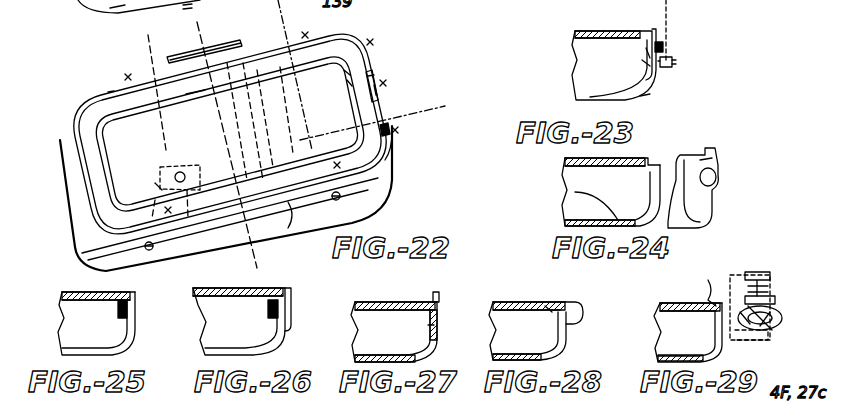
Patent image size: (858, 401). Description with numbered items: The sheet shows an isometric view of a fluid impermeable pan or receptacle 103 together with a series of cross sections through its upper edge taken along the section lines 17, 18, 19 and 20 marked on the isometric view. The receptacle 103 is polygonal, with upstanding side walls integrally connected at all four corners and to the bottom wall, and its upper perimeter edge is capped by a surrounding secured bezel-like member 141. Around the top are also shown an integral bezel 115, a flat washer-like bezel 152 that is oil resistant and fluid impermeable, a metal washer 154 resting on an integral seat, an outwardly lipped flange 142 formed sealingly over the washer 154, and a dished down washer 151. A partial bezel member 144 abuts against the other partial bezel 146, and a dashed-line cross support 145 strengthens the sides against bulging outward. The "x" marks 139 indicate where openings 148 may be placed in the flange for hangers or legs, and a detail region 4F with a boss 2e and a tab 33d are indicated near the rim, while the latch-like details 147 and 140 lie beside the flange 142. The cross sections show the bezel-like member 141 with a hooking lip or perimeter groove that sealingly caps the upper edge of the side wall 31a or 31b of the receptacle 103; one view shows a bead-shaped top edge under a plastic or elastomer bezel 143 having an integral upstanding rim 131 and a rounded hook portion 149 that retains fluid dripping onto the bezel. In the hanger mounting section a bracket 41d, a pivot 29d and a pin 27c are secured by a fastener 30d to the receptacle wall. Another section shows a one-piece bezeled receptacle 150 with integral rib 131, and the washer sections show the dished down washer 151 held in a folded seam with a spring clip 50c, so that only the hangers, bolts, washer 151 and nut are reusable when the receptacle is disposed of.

In FIG. 22, the tab portion 33d is at (122, 16).
In FIG. 22, the bezel-like member 141 is at (74, 110).
In FIG. 23, the bezel-like member 141 is at (623, 32).
In FIG. 24, the bezel-like member 141 is at (665, 160).
In FIG. 25, the bezel-like member 141 is at (125, 292).
In FIG. 26, the bezel-like member 141 is at (250, 298).
In FIG. 22, the partial bezel 146 is at (108, 90).
In FIG. 22, the receptacle 103 is at (378, 187).
In FIG. 23, the receptacle 103 is at (660, 79).
In FIG. 24, the receptacle 103 is at (590, 207).
In FIG. 25, the receptacle 103 is at (130, 338).
In FIG. 26, the receptacle 103 is at (268, 329).
In FIG. 27, the receptacle 103 is at (428, 330).
In FIG. 28, the receptacle 103 is at (566, 329).
In FIG. 29, the receptacle 103 is at (712, 330).
In FIG. 22, the receptacle wall 31a is at (412, 158).
In FIG. 23, the receptacle wall 31a is at (684, 81).
In FIG. 22, the bezel 143 is at (154, 46).
In FIG. 24, the bezel 143 is at (722, 168).
In FIG. 22, the cross support 145 is at (215, 93).
In FIG. 22, the latch recess 147 is at (360, 54).
In FIG. 22, the latch protrusion 140 is at (380, 72).
In FIG. 22, the flange 142 is at (388, 96).
In FIG. 28, the flange 142 is at (580, 302).
In FIG. 29, the flange 142 is at (783, 318).
In FIG. 22, the washer 152 is at (347, 74).
In FIG. 28, the washer 152 is at (534, 306).
In FIG. 22, the washer 154 is at (348, 84).
In FIG. 28, the washer 154 is at (559, 298).
In FIG. 29, the washer 154 is at (692, 293).
In FIG. 22, the section line 17— 17 is at (172, 142).
In FIG. 22, the section line 18— 18 is at (199, 30).
In FIG. 22, the section line 19— 19 is at (300, 101).
In FIG. 22, the section line 20— 20 is at (415, 119).
In FIG. 22, the detail area 4F is at (184, 166).
In FIG. 22, the mounting boss 2e is at (157, 188).
In FIG. 22, the "x" marks 139 is at (165, 247).
In FIG. 22, the openings 148 is at (72, 264).
In FIG. 22, the partial bezel member 144 is at (275, 217).
In FIG. 23, the hinge pin 27c is at (668, 34).
In FIG. 29, the hinge pin 27c is at (742, 268).
In FIG. 23, the fastener 30d is at (674, 62).
In FIG. 29, the fastener 30d is at (770, 336).
In FIG. 23, the bracket 41d is at (638, 55).
In FIG. 23, the pivot 29d is at (645, 66).
In FIG. 29, the pivot 29d is at (770, 286).
In FIG. 24, the side wall 31b is at (565, 192).
In FIG. 25, the side wall 31b is at (136, 319).
In FIG. 26, the side wall 31b is at (293, 341).
In FIG. 28, the side wall 31b is at (562, 341).
In FIG. 29, the side wall 31b is at (706, 342).
In FIG. 24, the upstanding rim 131 is at (715, 160).
In FIG. 26, the upstanding rim 131 is at (288, 290).
In FIG. 27, the upstanding rim 131 is at (441, 292).
In FIG. 24, the hook bulge 149 is at (714, 177).
In FIG. 27, the integral bezel 115 is at (418, 300).
In FIG. 27, the receptacle 150 is at (426, 322).
In FIG. 29, the dished down washer 151 is at (798, 298).
In FIG. 29, the spring clip 50c is at (775, 293).